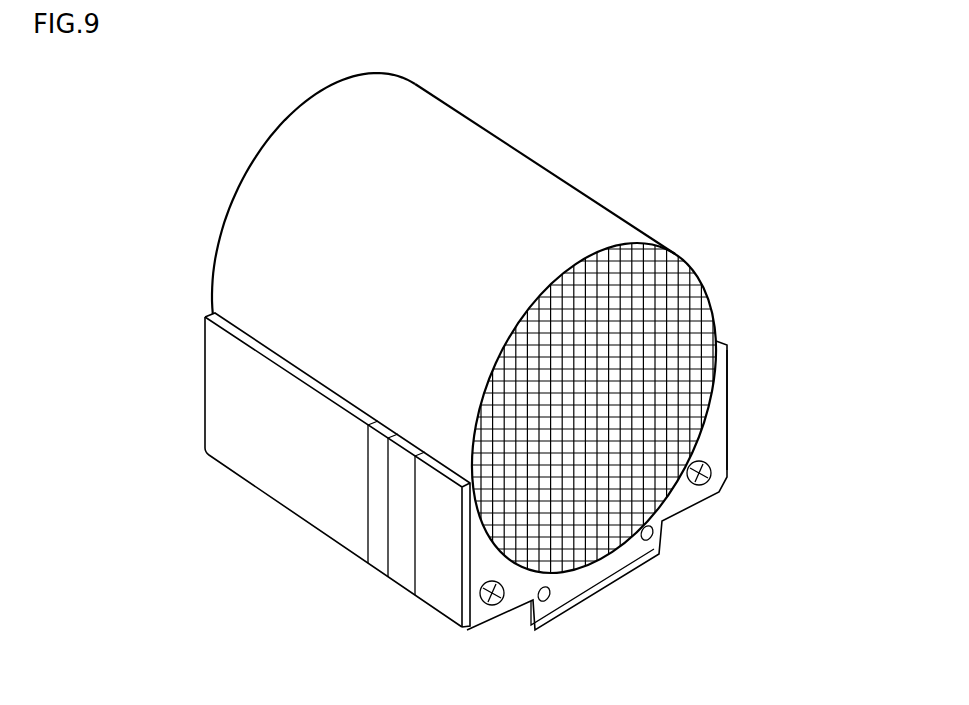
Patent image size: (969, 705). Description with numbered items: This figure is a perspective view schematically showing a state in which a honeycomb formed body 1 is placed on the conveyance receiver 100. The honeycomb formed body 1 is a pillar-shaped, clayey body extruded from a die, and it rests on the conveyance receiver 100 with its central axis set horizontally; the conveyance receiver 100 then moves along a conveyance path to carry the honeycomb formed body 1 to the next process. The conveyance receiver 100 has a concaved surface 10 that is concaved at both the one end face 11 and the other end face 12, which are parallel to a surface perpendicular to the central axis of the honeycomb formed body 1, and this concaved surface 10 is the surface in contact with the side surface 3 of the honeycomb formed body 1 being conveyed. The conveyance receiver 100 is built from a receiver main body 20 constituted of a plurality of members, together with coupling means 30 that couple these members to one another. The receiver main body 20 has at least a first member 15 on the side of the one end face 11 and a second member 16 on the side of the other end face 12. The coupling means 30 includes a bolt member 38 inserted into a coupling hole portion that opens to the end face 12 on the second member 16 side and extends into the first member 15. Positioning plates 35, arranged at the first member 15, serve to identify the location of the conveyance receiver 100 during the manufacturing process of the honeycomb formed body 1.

The honeycomb formed body 1 is at (577, 177).
The side surface 3 is at (460, 123).
The concaved surface 10 is at (577, 570).
The end face 11 is at (205, 399).
The end face 12 is at (718, 433).
The first member 15 is at (232, 460).
The second member 16 is at (420, 598).
The receiver main body 20 is at (282, 508).
The coupling means 30 is at (476, 601).
The positioning plates 35 is at (549, 601).
The bolt member 38 is at (494, 606).
The conveyance receiver 100 is at (733, 378).